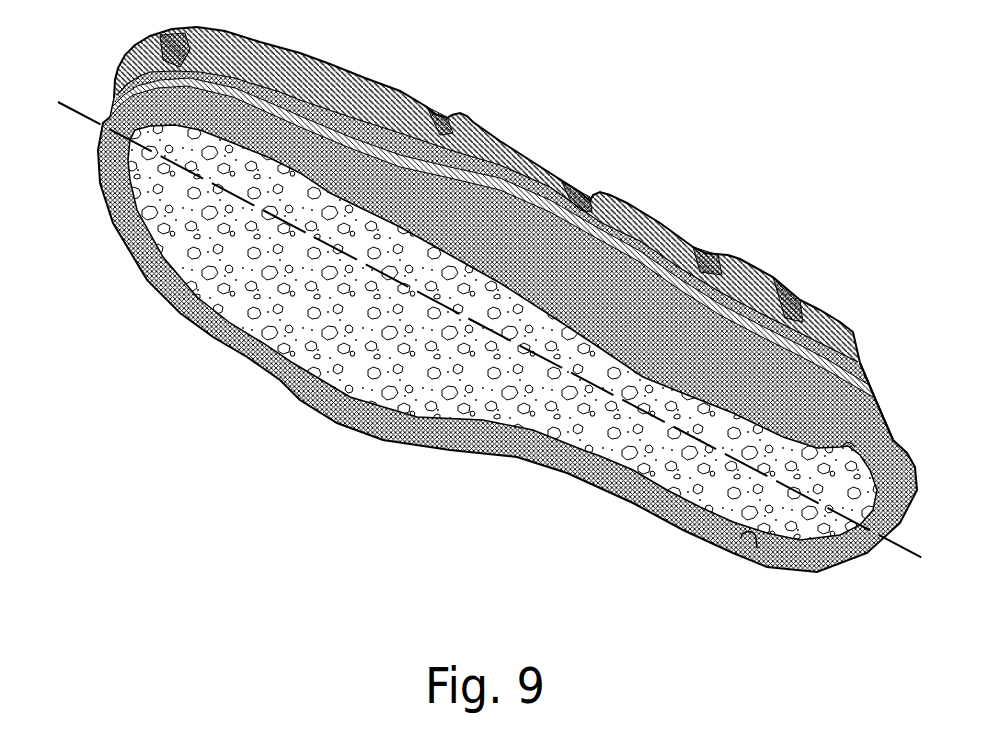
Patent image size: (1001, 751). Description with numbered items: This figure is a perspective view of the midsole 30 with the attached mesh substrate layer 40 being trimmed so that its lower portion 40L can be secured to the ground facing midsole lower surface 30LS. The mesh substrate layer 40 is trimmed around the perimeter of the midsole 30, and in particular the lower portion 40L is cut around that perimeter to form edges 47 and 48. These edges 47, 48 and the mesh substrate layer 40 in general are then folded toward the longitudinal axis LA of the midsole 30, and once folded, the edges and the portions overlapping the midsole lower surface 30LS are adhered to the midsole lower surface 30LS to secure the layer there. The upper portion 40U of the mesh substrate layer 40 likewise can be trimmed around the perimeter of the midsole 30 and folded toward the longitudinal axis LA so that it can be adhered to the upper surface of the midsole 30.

The midsole 30 is at (507, 329).
The midsole lower surface 30LS is at (450, 360).
The mesh substrate layer 40 is at (480, 203).
The upper portion 40U is at (493, 147).
The lower portion 40L is at (530, 213).
The edge 47 is at (851, 443).
The edge 48 is at (757, 548).
The longitudinal axis LA is at (72, 102).